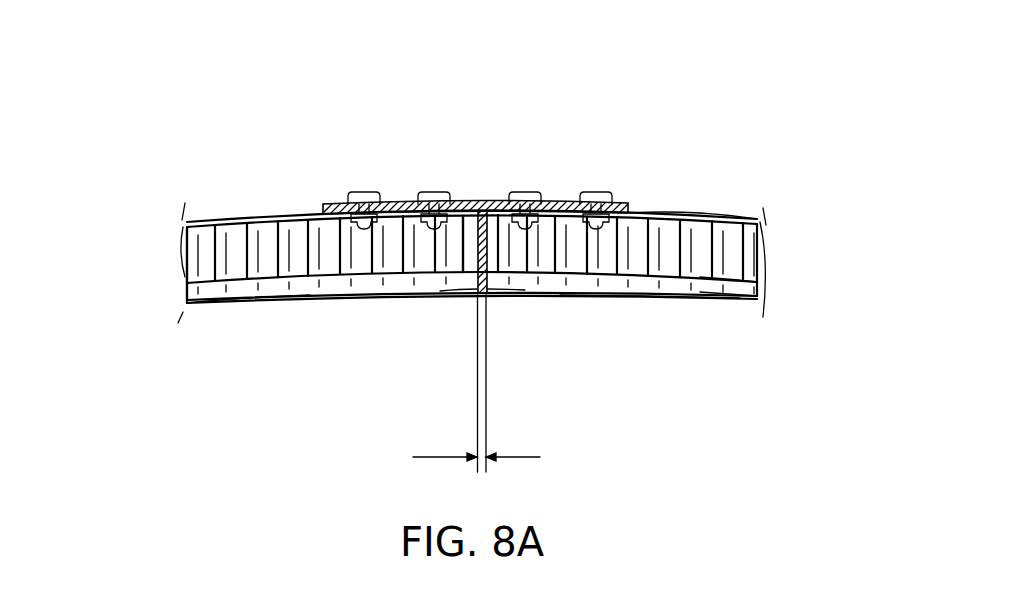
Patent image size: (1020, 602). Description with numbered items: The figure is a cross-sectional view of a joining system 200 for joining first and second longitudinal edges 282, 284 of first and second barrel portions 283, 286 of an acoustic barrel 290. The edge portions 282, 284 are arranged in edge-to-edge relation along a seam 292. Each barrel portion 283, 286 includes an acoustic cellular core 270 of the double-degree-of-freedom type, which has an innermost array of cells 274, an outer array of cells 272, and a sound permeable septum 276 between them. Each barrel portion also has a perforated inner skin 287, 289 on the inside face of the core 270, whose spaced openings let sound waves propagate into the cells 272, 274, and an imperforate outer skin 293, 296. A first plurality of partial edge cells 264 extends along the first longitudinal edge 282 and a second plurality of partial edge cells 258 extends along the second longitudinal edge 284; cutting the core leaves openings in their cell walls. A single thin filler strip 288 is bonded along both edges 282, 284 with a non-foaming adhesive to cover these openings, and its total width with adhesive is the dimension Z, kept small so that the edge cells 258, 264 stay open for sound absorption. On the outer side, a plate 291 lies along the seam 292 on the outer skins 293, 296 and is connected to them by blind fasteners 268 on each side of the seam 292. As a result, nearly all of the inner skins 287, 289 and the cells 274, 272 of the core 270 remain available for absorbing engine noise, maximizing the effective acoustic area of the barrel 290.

The joining system 200 is at (628, 107).
The seam 292 is at (484, 200).
The plate 291 is at (392, 200).
The filler strip 288 is at (497, 200).
The blind fasteners 268 is at (592, 198).
The second plurality of partial edge cells 258 is at (493, 255).
The first plurality of partial edge cells 264 is at (475, 255).
The first longitudinal edge 282 is at (461, 298).
The second longitudinal edge 284 is at (500, 298).
The imperforate outer skin 293 is at (265, 218).
The acoustic cellular core 270 is at (185, 275).
The perforated inner skin 287 is at (227, 307).
The first barrel portion 283 is at (282, 322).
The outer skin 296 is at (667, 212).
The acoustic barrel 290 is at (733, 217).
The outer array of cells 272 is at (767, 228).
The sound permeable septum 276 is at (747, 282).
The innermost array of cells 274 is at (747, 288).
The second barrel portion 286 is at (727, 318).
The inner skin 289 is at (608, 296).